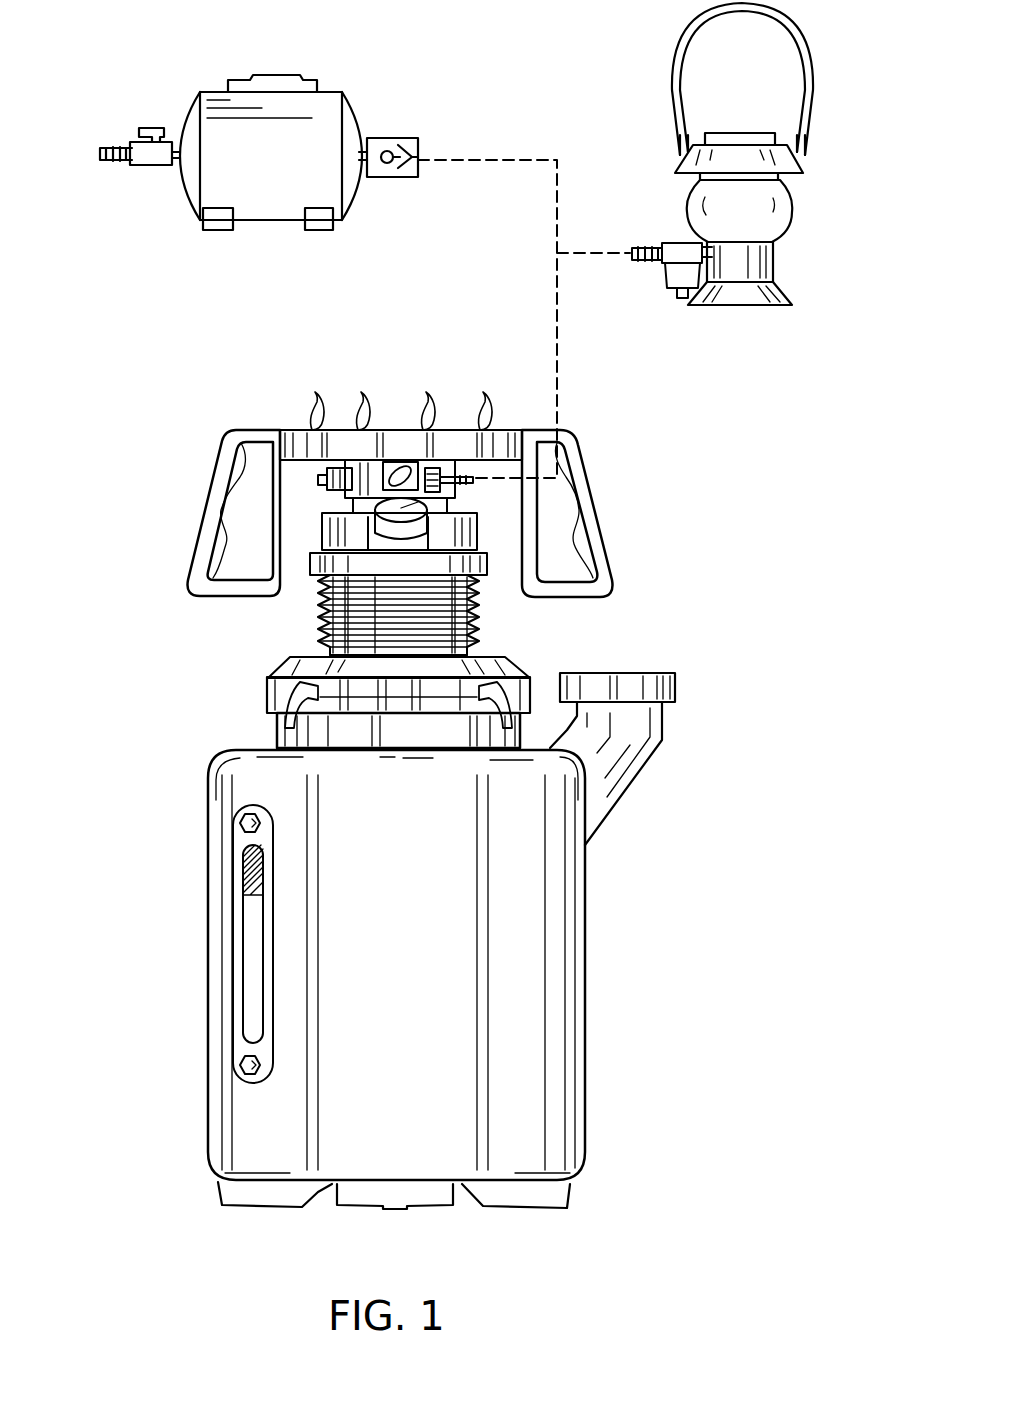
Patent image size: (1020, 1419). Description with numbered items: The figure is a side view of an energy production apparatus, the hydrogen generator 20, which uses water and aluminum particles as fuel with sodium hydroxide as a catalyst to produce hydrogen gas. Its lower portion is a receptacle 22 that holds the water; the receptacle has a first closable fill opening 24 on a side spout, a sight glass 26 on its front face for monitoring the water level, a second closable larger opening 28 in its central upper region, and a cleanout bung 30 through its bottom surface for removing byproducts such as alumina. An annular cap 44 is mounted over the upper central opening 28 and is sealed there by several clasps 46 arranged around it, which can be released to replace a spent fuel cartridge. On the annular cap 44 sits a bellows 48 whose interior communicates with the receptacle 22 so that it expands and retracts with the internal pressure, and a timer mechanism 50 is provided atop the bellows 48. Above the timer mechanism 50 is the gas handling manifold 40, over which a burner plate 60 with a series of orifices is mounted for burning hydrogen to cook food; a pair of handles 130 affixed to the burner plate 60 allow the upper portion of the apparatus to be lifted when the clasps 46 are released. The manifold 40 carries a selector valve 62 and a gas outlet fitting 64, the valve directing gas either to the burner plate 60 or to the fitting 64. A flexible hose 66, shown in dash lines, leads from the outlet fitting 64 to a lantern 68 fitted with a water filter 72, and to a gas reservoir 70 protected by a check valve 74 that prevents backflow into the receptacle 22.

The hydrogen generator 20 is at (752, 537).
The receptacle 22 is at (585, 982).
The first closable fill opening 24 is at (652, 673).
The sight glass 26 is at (233, 907).
The second closable larger opening 28 is at (267, 707).
The cleanout bung 30 is at (352, 1208).
The gas handling manifold 40 is at (345, 496).
The annular cap 44 is at (283, 665).
The clasps 46 is at (505, 690).
The bellows 48 is at (318, 612).
The timer mechanism 50 is at (322, 517).
The burner plate 60 is at (340, 430).
The selector valve 62 is at (408, 462).
The gas outlet fitting 64 is at (437, 468).
The flexible hose 66 is at (558, 355).
The lantern 68 is at (793, 203).
The gas reservoir 70 is at (255, 222).
The water filter 72 is at (663, 277).
The check valve 74 is at (395, 136).
The handles 130 is at (217, 480).